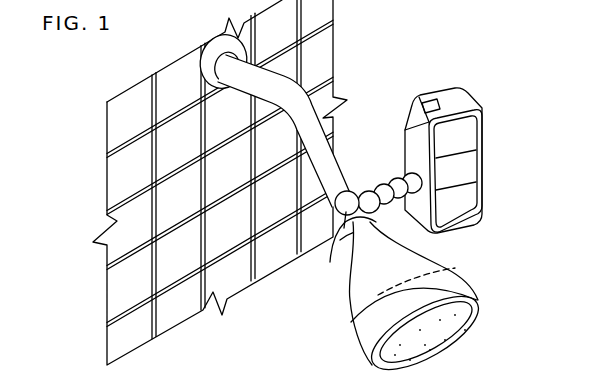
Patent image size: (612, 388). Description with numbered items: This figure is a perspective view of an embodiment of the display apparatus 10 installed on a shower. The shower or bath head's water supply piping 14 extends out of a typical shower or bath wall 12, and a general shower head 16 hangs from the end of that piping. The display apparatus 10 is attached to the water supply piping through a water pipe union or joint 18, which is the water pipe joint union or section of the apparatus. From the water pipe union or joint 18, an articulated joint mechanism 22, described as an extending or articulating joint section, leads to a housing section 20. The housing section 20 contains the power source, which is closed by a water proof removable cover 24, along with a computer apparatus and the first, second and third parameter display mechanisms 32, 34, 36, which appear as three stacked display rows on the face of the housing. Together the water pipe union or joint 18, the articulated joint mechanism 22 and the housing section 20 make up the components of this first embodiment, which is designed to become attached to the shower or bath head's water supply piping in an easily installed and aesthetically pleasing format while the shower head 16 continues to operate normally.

The display apparatus 10 is at (451, 131).
The shower or bath wall 12 is at (106, 164).
The water supply piping 14 is at (267, 83).
The shower head 16 is at (490, 282).
The water pipe union or joint 18 is at (340, 244).
The housing section 20 is at (464, 151).
The articulated joint mechanism 22 is at (386, 173).
The water proof removable cover 24 is at (415, 122).
The first parameter display mechanism 32 is at (468, 124).
The second parameter display mechanism 34 is at (468, 158).
The third parameter display mechanism 36 is at (468, 187).